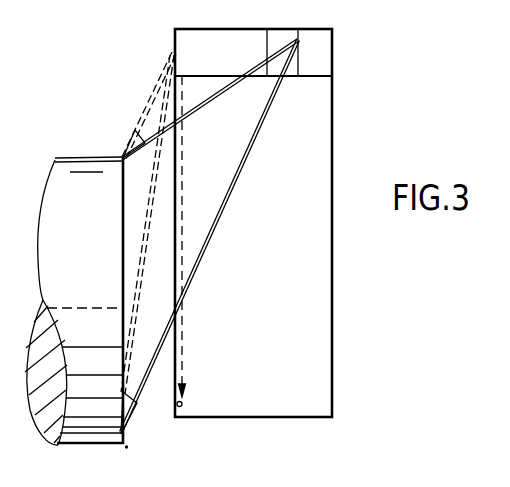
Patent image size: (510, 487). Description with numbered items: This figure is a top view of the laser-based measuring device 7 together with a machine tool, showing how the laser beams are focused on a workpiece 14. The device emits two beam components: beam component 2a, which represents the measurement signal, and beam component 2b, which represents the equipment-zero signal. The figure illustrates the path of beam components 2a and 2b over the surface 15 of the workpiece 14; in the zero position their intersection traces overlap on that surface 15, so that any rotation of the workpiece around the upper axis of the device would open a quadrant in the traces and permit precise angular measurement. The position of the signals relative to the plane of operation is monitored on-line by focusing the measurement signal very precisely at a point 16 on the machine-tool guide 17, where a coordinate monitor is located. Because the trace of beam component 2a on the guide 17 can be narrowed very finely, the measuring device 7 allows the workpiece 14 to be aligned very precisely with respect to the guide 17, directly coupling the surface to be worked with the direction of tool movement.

The beam component 2a is at (160, 92).
The beam component 2b is at (213, 98).
The laser-based measuring device 7 is at (318, 58).
The workpiece 14 is at (79, 167).
The surface 15 is at (125, 228).
The point 16 is at (182, 404).
The machine-tool guide 17 is at (273, 357).